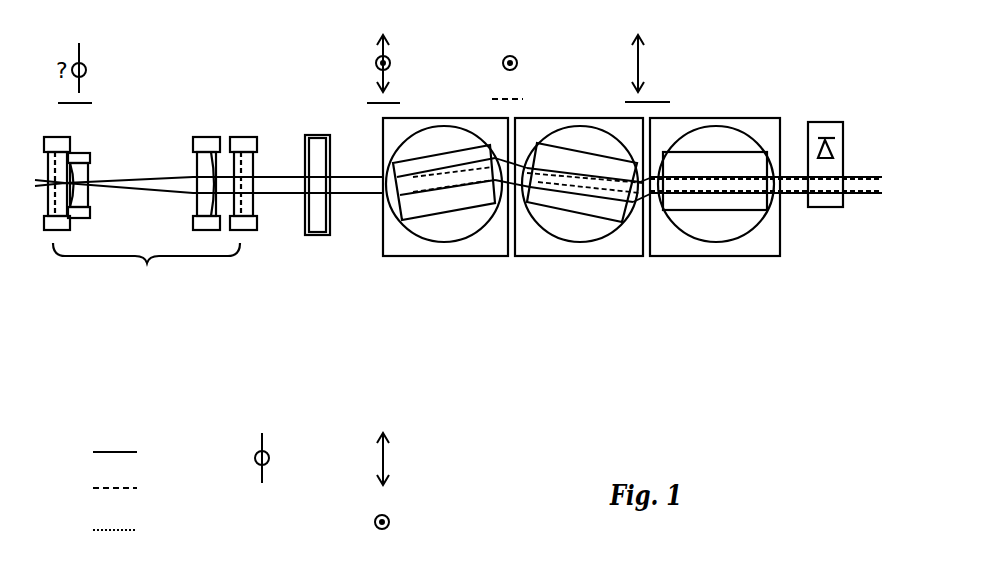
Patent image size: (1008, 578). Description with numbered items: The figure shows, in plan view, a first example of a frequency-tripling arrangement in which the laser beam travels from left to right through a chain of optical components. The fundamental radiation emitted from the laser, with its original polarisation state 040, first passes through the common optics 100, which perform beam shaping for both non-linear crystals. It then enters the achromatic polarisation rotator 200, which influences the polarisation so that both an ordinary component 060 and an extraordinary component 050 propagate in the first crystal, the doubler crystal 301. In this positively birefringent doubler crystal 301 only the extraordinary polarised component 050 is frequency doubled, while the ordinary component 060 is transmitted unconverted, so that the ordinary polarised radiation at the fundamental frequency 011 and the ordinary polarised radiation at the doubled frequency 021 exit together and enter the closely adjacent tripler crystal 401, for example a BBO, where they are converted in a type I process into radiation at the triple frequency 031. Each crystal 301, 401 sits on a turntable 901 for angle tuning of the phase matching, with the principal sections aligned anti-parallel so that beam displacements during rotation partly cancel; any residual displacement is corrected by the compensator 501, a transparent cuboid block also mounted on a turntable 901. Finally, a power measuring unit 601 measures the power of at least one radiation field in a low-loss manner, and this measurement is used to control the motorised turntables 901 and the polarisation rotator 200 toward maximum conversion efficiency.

The common optics 100 is at (147, 268).
The achromatic polarisation rotator 200 is at (315, 212).
The doubler crystal 301 is at (442, 203).
The tripler crystal 401 is at (583, 203).
The compensator 501 is at (717, 202).
The power measuring unit 601 is at (825, 197).
The turntable 901 is at (490, 240).
The ordinary polarised radiation at the fundamental frequency 011 is at (143, 452).
The ordinary polarised radiation at the doubled frequency 021 is at (143, 492).
The radiation at the triple frequency 031 is at (143, 530).
The original polarisation state 040 is at (281, 458).
The extraordinary component 050 is at (408, 459).
The ordinary component 060 is at (407, 522).